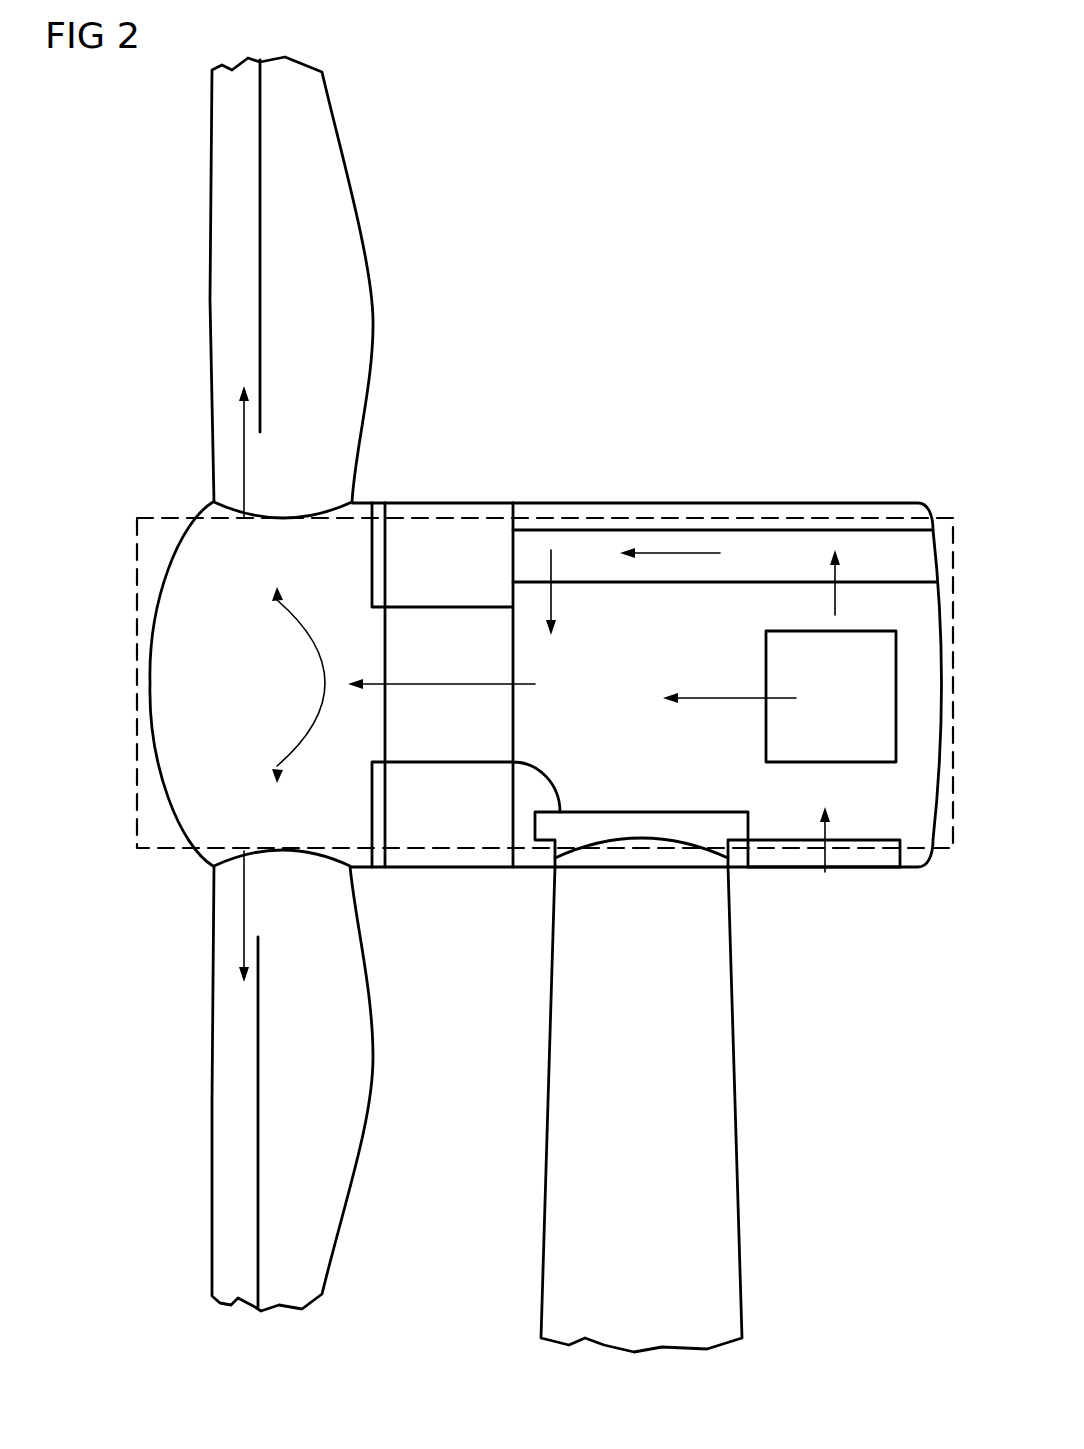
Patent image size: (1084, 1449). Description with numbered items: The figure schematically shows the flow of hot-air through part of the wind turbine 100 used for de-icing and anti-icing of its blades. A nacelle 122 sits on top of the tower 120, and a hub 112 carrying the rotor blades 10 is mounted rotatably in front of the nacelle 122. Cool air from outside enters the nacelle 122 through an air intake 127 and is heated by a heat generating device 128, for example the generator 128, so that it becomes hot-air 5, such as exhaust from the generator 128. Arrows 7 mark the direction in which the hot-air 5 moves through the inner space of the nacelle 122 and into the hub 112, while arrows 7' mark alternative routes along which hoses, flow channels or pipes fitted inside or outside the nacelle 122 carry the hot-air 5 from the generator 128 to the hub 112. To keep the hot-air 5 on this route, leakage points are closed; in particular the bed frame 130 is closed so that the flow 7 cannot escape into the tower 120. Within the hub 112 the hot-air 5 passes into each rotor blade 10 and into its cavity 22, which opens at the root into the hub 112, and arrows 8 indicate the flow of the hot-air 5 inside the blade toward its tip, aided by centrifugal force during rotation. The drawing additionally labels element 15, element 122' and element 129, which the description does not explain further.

The wind turbine 100 is at (780, 220).
The rotor blade 10 is at (195, 272).
The shear web 15 is at (261, 345).
The cavity 22 is at (308, 165).
The hot-air 5 is at (413, 684).
The flow of hot-air 7 is at (517, 685).
The flow by alternate paths 7' is at (723, 592).
The flow of hot-air within the airfoil section 8 is at (244, 453).
The hub 112 is at (167, 650).
The tower 120 is at (723, 1097).
The nacelle 122 is at (647, 646).
The nacelle air channel 122' is at (725, 513).
The air intake 127 is at (860, 867).
The heat generating device 128 is at (857, 762).
The rotor assembly 129 is at (137, 795).
The bed frame 130 is at (640, 836).